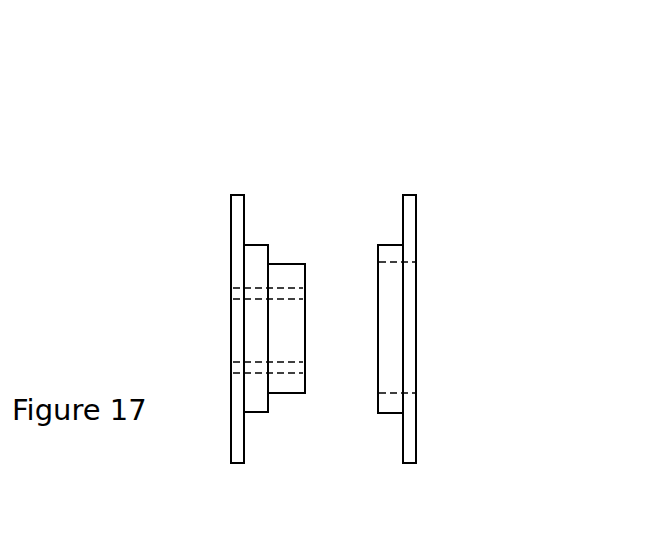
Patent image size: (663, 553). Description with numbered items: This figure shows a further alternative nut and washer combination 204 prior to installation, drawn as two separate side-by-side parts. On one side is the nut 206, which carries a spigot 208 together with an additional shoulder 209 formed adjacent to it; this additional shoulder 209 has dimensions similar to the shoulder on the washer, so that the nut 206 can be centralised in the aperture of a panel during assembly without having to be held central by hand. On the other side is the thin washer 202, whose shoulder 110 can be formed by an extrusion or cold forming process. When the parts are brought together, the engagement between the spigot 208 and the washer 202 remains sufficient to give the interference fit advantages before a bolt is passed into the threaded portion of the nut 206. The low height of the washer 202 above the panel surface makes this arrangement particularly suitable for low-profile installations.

The shoulder 110 is at (390, 250).
The washer 202 is at (417, 202).
The nut and washer combination 204 is at (494, 241).
The nut 206 is at (207, 273).
The spigot 208 is at (303, 267).
The additional shoulder 209 is at (253, 253).